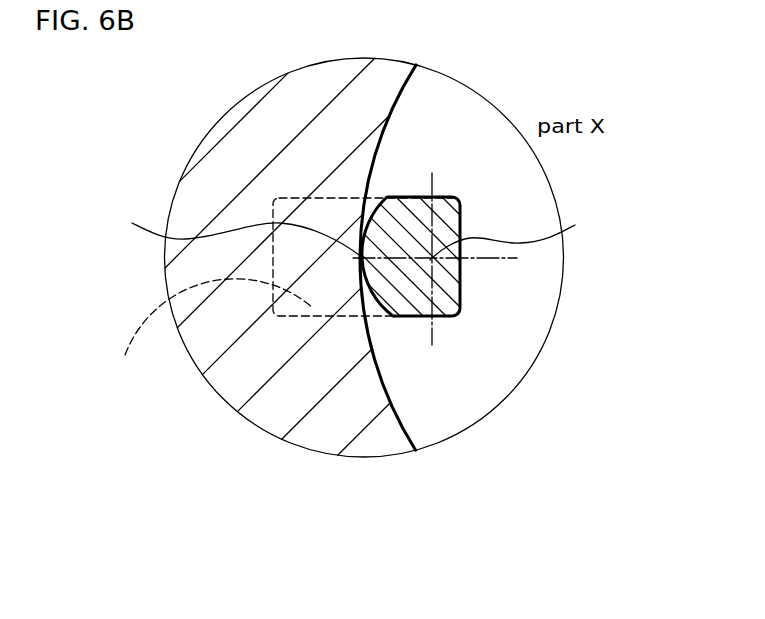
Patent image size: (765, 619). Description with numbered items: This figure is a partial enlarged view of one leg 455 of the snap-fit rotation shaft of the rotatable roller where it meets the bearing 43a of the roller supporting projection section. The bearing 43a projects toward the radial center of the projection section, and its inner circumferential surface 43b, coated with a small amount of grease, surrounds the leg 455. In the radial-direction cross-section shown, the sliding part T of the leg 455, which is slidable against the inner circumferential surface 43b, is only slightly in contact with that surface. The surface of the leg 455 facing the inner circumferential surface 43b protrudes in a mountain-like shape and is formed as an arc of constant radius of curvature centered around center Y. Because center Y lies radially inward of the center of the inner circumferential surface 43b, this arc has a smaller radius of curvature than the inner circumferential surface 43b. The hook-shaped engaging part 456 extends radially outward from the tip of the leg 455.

The bearing 43a is at (250, 130).
The inner circumferential surface 43b is at (403, 92).
The leg 455 is at (407, 307).
The engaging part 456 is at (208, 333).
The sliding part T is at (239, 235).
The center Y is at (510, 235).